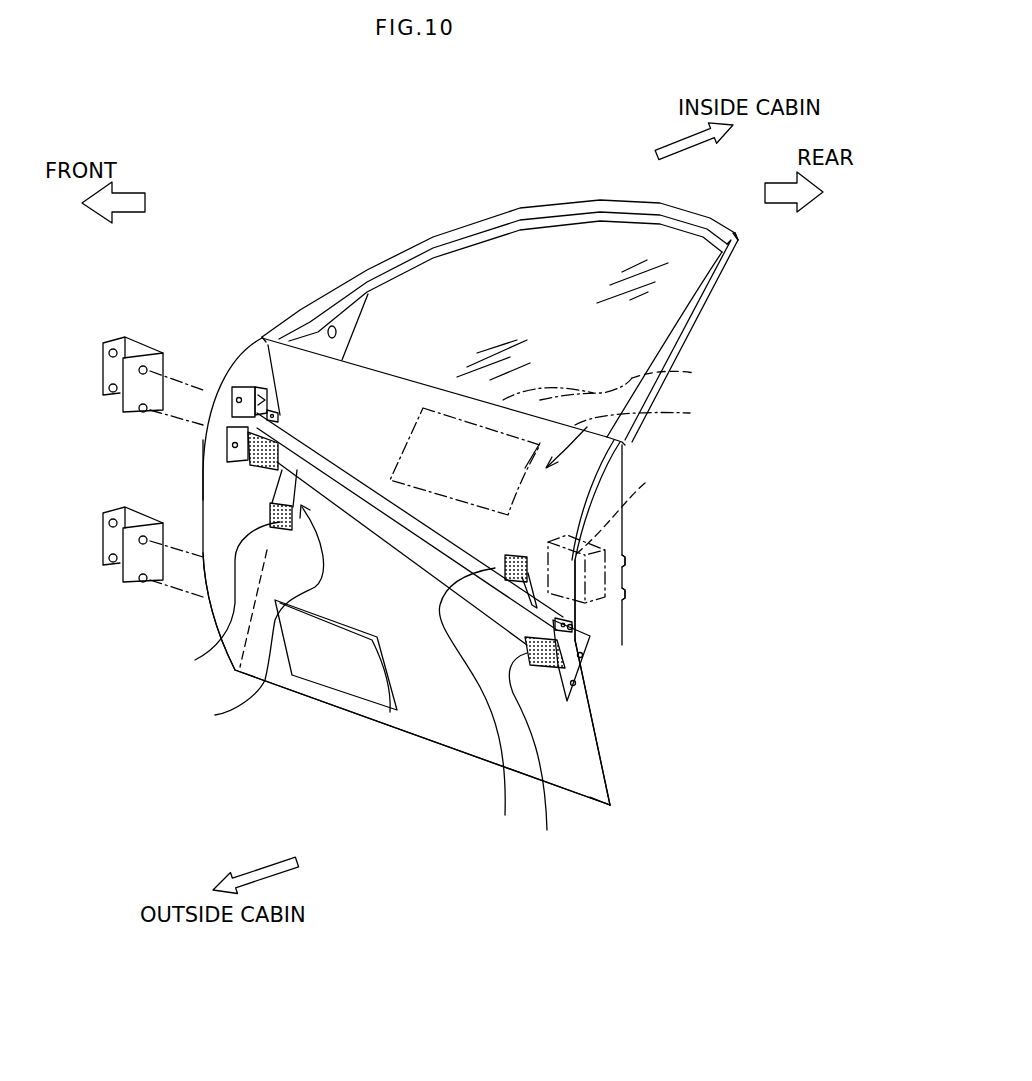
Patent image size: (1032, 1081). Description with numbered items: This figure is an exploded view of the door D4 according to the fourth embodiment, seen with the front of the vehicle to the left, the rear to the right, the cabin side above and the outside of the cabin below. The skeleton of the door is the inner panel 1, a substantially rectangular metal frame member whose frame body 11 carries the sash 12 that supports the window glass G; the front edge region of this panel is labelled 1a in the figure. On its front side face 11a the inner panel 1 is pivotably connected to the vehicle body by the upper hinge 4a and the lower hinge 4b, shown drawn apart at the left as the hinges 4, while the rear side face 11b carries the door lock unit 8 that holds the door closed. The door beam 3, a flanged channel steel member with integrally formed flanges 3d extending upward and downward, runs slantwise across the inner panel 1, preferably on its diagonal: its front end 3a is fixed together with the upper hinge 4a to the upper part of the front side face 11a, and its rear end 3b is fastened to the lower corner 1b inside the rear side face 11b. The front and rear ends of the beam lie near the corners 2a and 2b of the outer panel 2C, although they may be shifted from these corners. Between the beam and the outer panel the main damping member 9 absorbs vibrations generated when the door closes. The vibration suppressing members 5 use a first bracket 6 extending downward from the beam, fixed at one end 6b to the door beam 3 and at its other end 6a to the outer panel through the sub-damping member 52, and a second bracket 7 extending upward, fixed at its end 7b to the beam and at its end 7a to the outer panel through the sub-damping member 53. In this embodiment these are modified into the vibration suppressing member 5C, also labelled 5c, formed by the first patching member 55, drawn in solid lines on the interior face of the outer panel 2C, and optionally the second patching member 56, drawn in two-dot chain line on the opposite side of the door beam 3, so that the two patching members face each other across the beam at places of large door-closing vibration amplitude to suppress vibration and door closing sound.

The inner panel 1 is at (612, 462).
The front edge of inner panel 1a is at (242, 353).
The lower corner of the rear end 1b is at (592, 665).
The front corner of the outer panel 2a is at (270, 340).
The rear corner of the outer panel 2b is at (612, 810).
The outer panel 2C is at (568, 743).
The door beam 3 is at (463, 529).
The front end of the door beam 3a is at (237, 387).
The rear end of the door beam 3b is at (587, 667).
The flanges 3d is at (352, 480).
The door hinge 4 is at (123, 448).
The upper hinge 4a is at (103, 370).
The lower hinge 4b is at (103, 540).
The vibration suppressing member 5 is at (260, 485).
The vibration suppressing member 5c is at (556, 451).
The vibration suppressing member 5C is at (400, 690).
The first bracket 6 is at (259, 618).
The other end of the first bracket 6a is at (302, 530).
The one end of the first bracket 6b is at (298, 447).
The second bracket 7 is at (530, 607).
The other end of the second bracket 7a is at (535, 556).
The one end of the second bracket 7b is at (515, 615).
The door lock unit 8 is at (645, 483).
The main damping member 9 is at (532, 754).
The frame body 11 is at (608, 612).
The front side face 11a is at (205, 465).
The rear side face 11b is at (600, 640).
The sash 12 is at (683, 307).
The sub-damping member 52 is at (195, 660).
The sub-damping member 53 is at (476, 706).
The first patching member 55 is at (337, 612).
The second patching member 56 is at (632, 380).
The window glass G is at (575, 253).
The door D4 is at (724, 278).